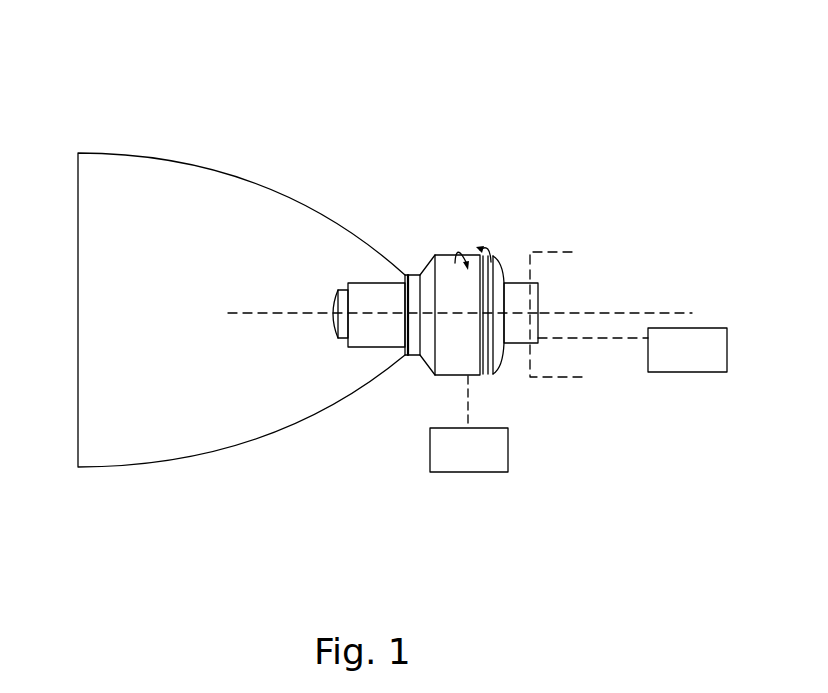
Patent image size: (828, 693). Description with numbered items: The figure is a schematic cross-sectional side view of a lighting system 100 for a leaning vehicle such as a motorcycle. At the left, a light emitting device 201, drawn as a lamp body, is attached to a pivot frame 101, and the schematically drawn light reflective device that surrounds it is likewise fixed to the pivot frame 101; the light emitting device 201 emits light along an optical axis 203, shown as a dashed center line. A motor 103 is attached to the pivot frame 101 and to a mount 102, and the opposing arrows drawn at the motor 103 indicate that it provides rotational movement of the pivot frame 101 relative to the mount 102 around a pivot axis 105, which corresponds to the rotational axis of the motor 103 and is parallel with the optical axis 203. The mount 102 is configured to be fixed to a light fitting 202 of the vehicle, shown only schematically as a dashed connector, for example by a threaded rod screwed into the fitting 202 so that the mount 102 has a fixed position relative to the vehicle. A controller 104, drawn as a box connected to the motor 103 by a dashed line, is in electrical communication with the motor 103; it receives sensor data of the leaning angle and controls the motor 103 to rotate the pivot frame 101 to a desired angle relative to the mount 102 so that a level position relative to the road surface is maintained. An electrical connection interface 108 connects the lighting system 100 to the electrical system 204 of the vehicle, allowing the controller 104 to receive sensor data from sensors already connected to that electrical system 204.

The lighting system 100 is at (99, 64).
The optical axis 203 is at (242, 313).
The light emitting device 201 is at (330, 328).
The pivot frame 101 is at (374, 362).
The motor 103 is at (458, 204).
The mount 102 is at (517, 283).
The light fitting 202 is at (572, 251).
The pivot axis 105 is at (606, 313).
The electrical connection interface 108 is at (590, 339).
The electrical system 204 is at (687, 350).
The controller 104 is at (469, 424).